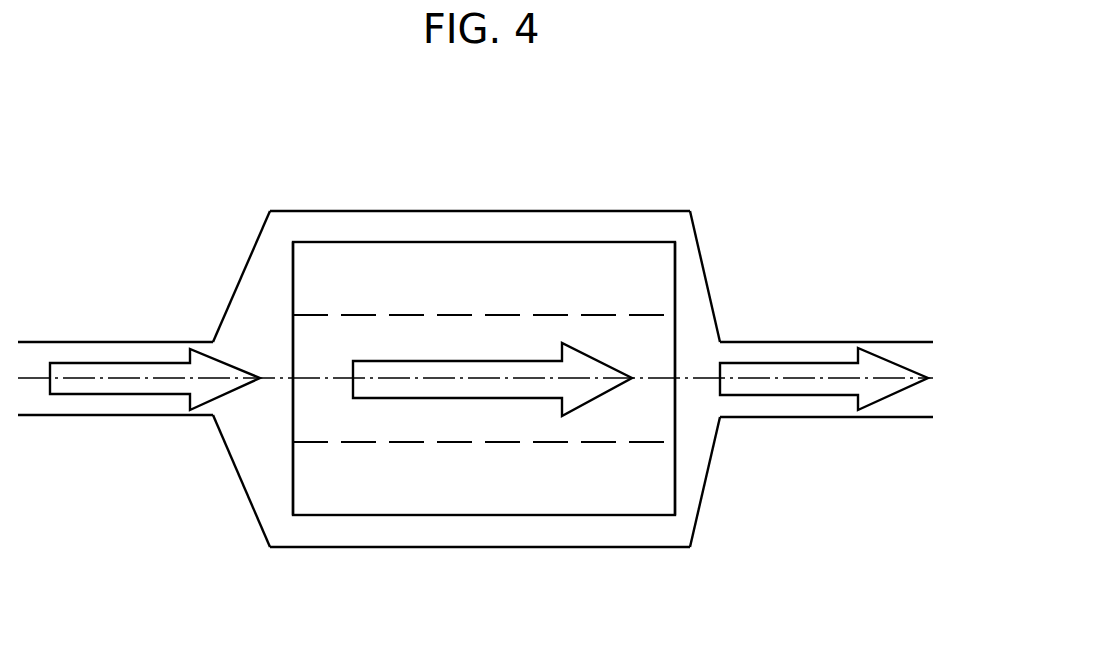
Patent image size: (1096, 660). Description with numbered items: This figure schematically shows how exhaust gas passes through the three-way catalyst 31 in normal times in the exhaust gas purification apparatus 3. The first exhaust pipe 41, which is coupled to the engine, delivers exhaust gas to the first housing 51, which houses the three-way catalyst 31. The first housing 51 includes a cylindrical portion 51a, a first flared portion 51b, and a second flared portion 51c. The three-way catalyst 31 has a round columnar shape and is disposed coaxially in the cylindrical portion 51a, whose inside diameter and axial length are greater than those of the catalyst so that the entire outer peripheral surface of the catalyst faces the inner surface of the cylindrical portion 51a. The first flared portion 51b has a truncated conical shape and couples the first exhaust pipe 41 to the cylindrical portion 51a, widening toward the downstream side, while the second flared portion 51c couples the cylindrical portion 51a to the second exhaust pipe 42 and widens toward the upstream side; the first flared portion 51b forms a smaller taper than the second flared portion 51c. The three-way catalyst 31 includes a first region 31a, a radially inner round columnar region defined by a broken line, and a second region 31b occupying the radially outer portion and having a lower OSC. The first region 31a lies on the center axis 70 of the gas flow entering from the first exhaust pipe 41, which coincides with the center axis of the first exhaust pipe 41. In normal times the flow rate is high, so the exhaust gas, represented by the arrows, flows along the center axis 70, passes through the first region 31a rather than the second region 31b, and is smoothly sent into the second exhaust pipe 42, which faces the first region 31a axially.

The exhaust gas purification apparatus 3 is at (193, 118).
The three-way catalyst 31 is at (588, 242).
The first region 31a is at (508, 340).
The second region 31b is at (428, 477).
The first exhaust pipe 41 is at (103, 342).
The second exhaust pipe 42 is at (835, 342).
The first housing 51 is at (292, 185).
The cylindrical portion 51a is at (345, 212).
The first flared portion 51b is at (258, 240).
The second flared portion 51c is at (698, 240).
The center axis 70 is at (277, 379).